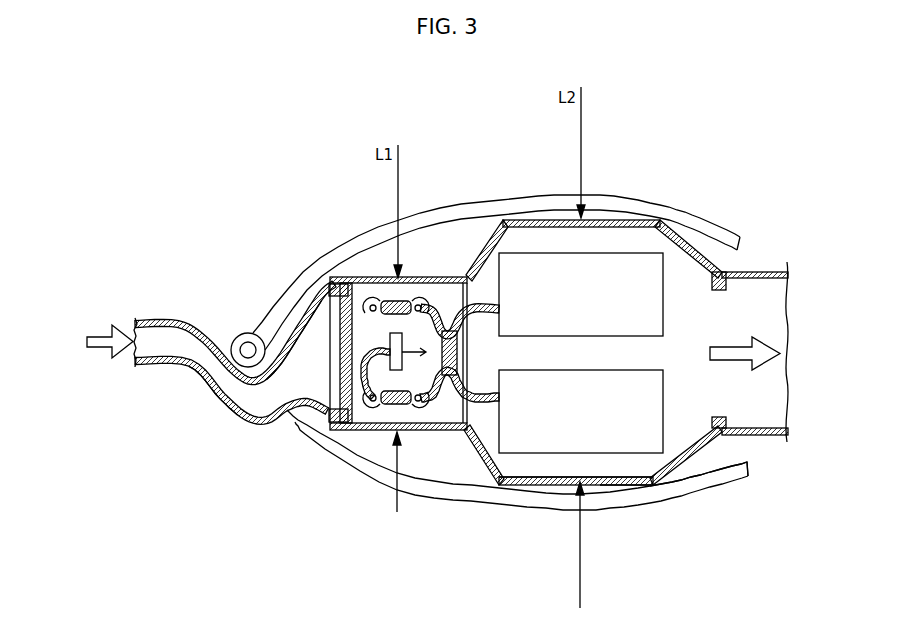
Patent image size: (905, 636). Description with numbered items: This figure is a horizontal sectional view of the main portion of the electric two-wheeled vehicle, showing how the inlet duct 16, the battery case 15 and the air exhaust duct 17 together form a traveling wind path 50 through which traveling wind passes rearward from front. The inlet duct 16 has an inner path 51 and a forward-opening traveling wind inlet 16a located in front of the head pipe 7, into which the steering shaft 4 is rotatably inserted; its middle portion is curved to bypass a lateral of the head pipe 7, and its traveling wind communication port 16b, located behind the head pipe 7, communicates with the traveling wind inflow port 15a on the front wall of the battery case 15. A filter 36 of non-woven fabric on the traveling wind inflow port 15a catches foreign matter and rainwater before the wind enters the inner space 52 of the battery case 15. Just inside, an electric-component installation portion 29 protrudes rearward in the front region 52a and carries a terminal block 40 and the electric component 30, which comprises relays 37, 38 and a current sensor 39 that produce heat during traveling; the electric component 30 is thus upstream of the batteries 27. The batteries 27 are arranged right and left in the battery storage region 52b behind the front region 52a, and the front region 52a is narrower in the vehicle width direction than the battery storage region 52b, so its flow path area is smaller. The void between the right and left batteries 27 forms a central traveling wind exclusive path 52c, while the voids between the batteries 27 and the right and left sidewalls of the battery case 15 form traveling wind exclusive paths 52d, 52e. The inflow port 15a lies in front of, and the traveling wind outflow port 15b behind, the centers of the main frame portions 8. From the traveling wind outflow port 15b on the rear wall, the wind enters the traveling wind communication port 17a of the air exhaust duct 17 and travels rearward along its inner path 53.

The steering shaft 4 is at (243, 348).
The head pipe 7 is at (243, 337).
The main frame portions 8 is at (727, 252).
The battery case 15 is at (523, 218).
The traveling wind inflow port 15a is at (307, 410).
The traveling wind outflow port 15b is at (692, 464).
The inlet duct 16 is at (208, 406).
The traveling wind inlet 16a is at (127, 322).
The traveling wind communication port 16b is at (313, 300).
The air exhaust duct 17 is at (784, 280).
The traveling wind communication port 17a is at (741, 252).
The batteries 27 is at (640, 393).
The electric-component installation portion 29 is at (447, 277).
The electric component 30 is at (422, 290).
The filter 36 is at (330, 354).
The relay 37 is at (403, 424).
The relay 38 is at (388, 300).
The current sensor 39 is at (341, 383).
The terminal block 40 is at (445, 396).
The traveling wind path 50 is at (515, 467).
The inner path 51 is at (187, 364).
The inner space 52 is at (675, 442).
The front region 52a is at (387, 413).
The battery storage region 52b is at (610, 463).
The traveling wind exclusive path 52c is at (542, 350).
The traveling wind exclusive path 52d is at (602, 236).
The traveling wind exclusive path 52e is at (643, 462).
The inner path 53 is at (753, 437).